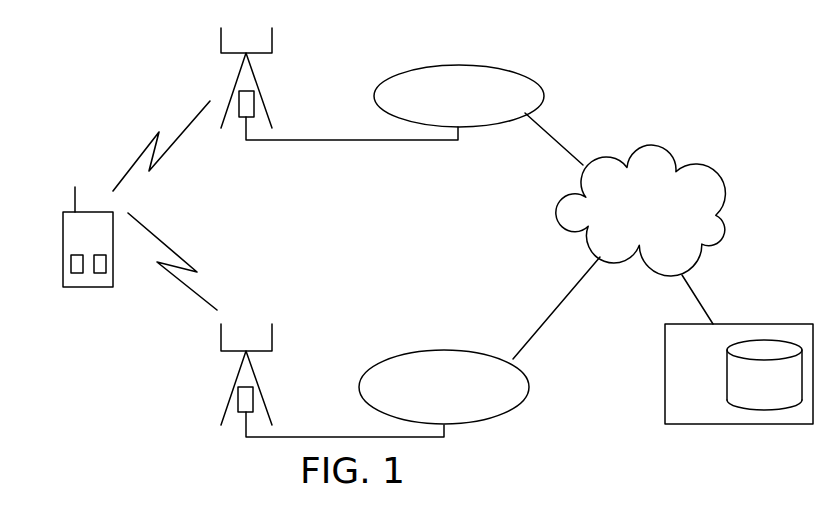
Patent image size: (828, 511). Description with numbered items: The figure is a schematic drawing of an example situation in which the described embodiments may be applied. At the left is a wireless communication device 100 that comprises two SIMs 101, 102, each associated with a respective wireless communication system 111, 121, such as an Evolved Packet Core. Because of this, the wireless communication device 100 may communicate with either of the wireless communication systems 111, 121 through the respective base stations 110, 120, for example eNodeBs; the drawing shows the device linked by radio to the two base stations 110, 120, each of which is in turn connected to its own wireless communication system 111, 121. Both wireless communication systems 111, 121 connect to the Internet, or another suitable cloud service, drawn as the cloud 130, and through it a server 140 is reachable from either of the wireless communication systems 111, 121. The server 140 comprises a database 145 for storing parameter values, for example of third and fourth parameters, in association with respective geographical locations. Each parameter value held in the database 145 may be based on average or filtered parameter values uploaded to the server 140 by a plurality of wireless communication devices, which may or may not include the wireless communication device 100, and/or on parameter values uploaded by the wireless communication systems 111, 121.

The wireless communication device 100 is at (63, 227).
The SIM 101 is at (71, 265).
The SIM 102 is at (106, 265).
The base station 110 is at (253, 393).
The wireless communication system 111 is at (444, 387).
The base station 120 is at (253, 98).
The wireless communication system 121 is at (459, 96).
The internet / wide area network cloud 130 is at (641, 210).
The server 140 is at (739, 374).
The database 145 is at (764, 375).